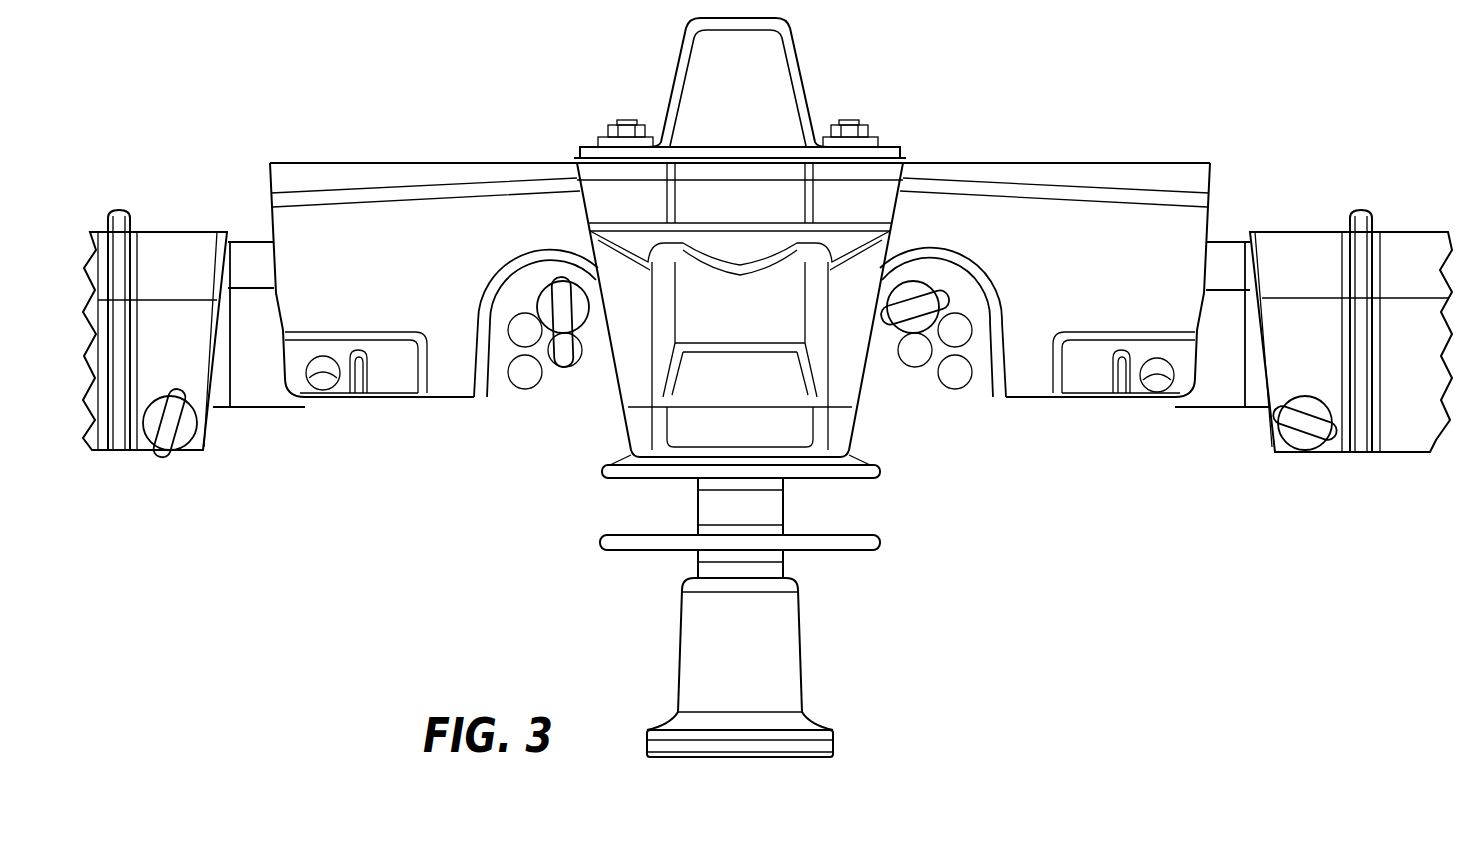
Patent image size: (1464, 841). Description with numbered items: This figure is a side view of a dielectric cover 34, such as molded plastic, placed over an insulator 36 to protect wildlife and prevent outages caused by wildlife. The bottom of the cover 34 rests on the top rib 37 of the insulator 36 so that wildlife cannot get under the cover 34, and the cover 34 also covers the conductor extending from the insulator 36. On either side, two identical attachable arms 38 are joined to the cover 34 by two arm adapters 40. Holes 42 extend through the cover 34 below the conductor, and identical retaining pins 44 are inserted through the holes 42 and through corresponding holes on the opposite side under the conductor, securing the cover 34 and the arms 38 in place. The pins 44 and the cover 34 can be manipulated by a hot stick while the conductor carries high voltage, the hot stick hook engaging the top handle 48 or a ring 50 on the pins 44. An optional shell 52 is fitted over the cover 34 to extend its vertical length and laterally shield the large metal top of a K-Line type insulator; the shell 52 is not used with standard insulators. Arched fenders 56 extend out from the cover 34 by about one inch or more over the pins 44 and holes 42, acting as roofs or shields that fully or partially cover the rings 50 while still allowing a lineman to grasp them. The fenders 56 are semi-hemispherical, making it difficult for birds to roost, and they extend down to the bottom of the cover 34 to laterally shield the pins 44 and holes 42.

The dielectric cover 34 is at (1036, 128).
The insulator 36 is at (858, 591).
The top rib 37 is at (880, 470).
The attachable arm 38 is at (155, 232).
The arm adapter 40 is at (242, 408).
The hole 42 is at (955, 375).
The retaining pin 44 is at (893, 337).
The top handle 48 is at (810, 92).
The ring 50 is at (563, 370).
The shell 52 is at (871, 198).
The arched fender 56 is at (467, 377).